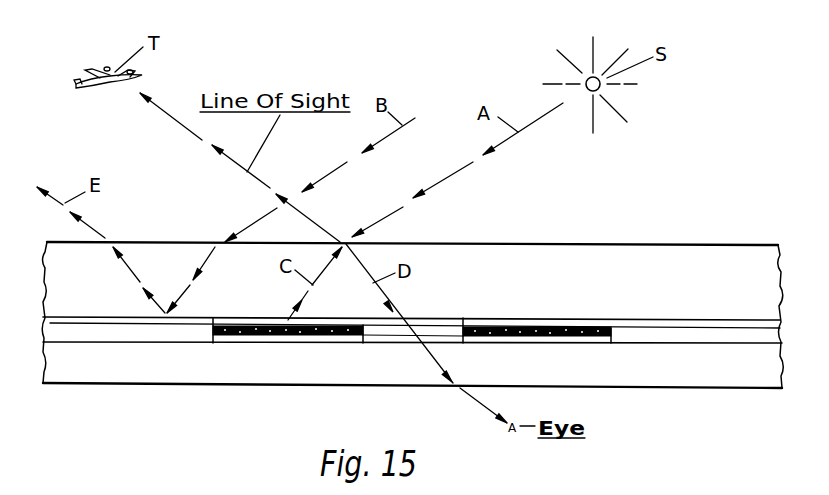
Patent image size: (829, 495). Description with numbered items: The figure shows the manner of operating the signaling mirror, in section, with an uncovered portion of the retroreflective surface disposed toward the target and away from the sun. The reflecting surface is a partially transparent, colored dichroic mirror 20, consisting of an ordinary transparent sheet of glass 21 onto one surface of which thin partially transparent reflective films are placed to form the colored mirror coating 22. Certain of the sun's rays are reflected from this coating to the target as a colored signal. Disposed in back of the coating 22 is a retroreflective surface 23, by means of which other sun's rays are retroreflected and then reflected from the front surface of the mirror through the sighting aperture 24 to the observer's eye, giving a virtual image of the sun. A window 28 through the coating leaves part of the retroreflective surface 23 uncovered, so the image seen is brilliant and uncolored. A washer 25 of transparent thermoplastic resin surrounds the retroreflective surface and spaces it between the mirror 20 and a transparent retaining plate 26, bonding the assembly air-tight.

The dichroic mirror 20 is at (536, 237).
The transparent sheet of glass 21 is at (643, 252).
The colored mirror coating 22 is at (75, 320).
The retroreflective surface 23 is at (553, 337).
The sighting aperture 24 is at (442, 330).
The washer 25 is at (163, 333).
The retaining plate 26 is at (675, 373).
The window 28 is at (227, 314).